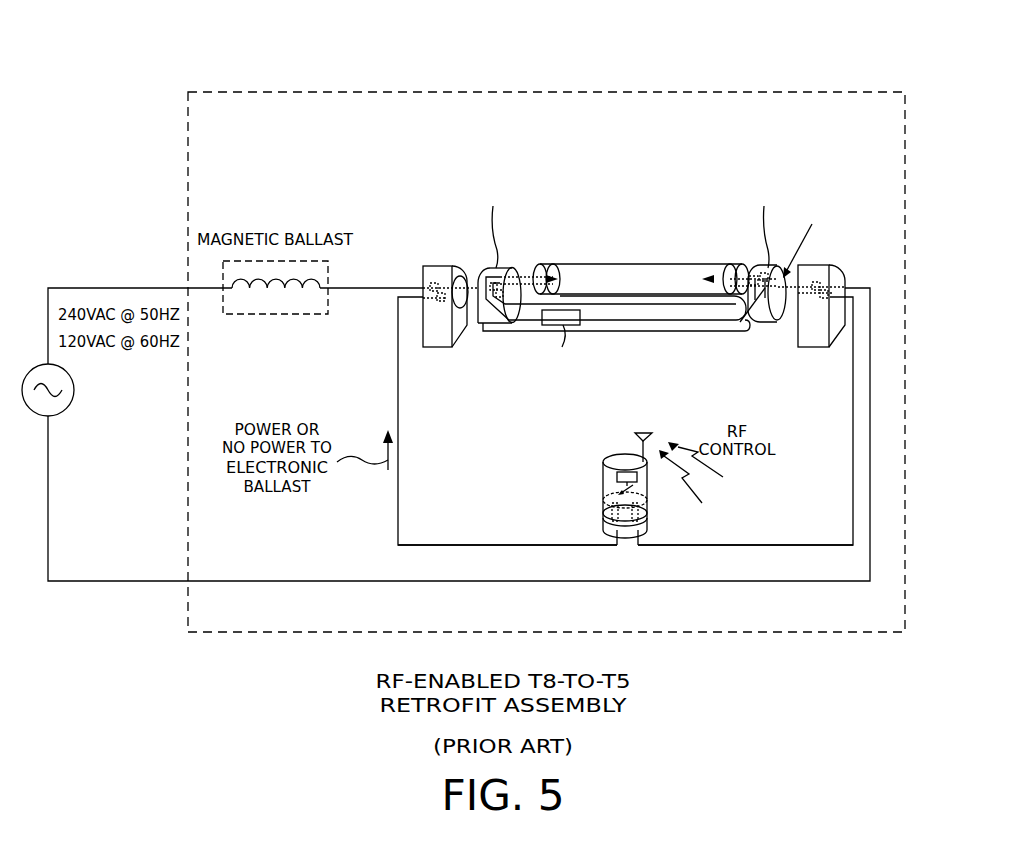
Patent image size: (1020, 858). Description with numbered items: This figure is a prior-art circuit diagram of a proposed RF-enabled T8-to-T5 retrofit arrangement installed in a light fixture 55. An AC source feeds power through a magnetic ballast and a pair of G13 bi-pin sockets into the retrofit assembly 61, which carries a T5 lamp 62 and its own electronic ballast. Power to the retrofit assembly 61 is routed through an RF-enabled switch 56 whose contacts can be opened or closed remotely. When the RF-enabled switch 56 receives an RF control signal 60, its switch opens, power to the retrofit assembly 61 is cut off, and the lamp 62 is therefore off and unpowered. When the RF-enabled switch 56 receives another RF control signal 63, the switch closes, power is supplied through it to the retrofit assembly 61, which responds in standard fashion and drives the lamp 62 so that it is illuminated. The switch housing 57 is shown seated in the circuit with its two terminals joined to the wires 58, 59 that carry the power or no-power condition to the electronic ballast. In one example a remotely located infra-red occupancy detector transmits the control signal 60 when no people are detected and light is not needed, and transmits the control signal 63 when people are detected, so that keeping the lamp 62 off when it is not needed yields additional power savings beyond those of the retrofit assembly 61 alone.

The light fixture 55 is at (538, 92).
The RF-enabled switch 56 is at (583, 477).
The switch base/connector ring 57 is at (603, 518).
The power wire to electronic ballast (left) 58 is at (484, 545).
The power wire to electronic ballast (right) 59 is at (755, 545).
The RF control signal 60 is at (681, 480).
The retrofit assembly 61 is at (653, 252).
The lamp 62 is at (598, 262).
The RF control signal 63 is at (717, 472).